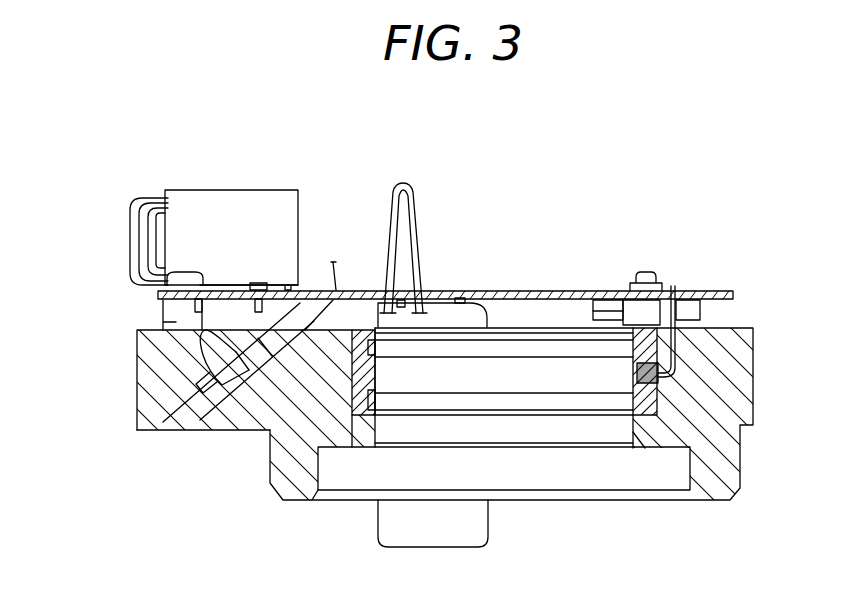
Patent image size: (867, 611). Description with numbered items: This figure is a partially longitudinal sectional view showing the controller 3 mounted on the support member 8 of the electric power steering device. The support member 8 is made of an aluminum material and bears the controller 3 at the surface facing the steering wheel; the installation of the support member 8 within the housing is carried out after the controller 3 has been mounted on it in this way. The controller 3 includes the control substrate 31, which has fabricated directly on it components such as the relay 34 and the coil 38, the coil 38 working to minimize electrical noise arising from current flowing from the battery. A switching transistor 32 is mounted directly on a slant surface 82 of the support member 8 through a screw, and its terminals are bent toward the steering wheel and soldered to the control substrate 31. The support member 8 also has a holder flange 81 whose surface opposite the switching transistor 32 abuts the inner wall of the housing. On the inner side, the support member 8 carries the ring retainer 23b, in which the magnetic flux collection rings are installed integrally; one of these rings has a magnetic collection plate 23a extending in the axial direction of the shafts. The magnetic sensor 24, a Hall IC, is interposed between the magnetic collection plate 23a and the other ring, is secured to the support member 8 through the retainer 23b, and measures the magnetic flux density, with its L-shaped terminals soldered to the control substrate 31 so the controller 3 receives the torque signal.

The controller 3 is at (549, 271).
The support member 8 is at (190, 402).
The magnetic collection plate 23a is at (352, 415).
The ring retainer 23b is at (354, 330).
The magnetic sensor 24 is at (683, 356).
The control substrate 31 is at (718, 288).
The switching transistor 32 is at (262, 330).
The relay 34 is at (207, 208).
The coil 38 is at (131, 240).
The holder flange 81 is at (200, 436).
The slant surface 82 is at (160, 413).